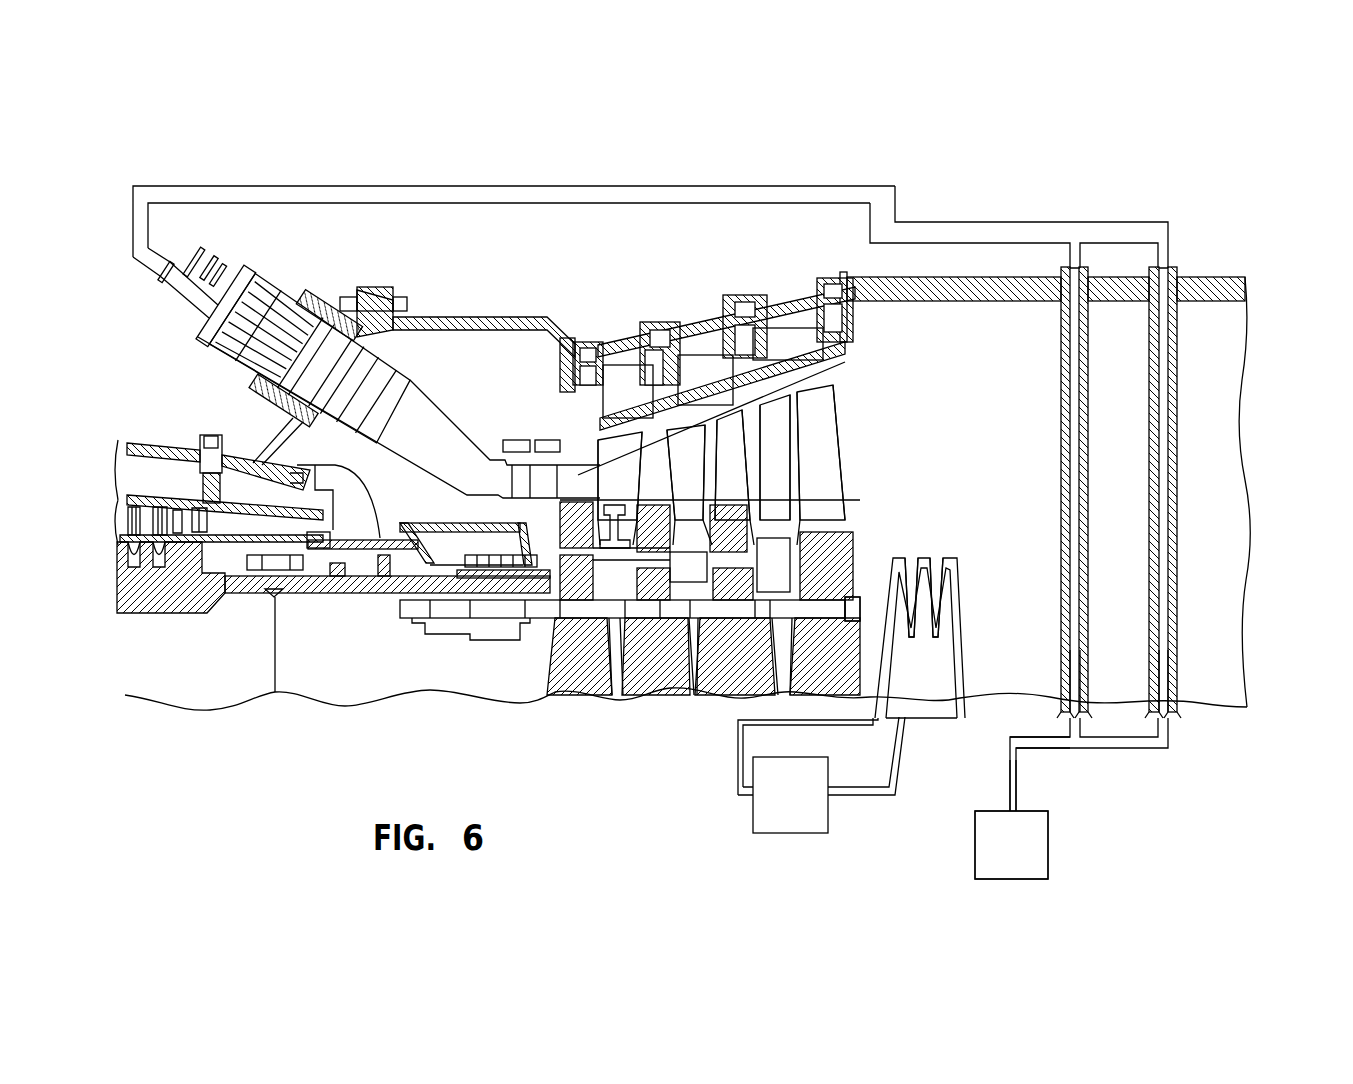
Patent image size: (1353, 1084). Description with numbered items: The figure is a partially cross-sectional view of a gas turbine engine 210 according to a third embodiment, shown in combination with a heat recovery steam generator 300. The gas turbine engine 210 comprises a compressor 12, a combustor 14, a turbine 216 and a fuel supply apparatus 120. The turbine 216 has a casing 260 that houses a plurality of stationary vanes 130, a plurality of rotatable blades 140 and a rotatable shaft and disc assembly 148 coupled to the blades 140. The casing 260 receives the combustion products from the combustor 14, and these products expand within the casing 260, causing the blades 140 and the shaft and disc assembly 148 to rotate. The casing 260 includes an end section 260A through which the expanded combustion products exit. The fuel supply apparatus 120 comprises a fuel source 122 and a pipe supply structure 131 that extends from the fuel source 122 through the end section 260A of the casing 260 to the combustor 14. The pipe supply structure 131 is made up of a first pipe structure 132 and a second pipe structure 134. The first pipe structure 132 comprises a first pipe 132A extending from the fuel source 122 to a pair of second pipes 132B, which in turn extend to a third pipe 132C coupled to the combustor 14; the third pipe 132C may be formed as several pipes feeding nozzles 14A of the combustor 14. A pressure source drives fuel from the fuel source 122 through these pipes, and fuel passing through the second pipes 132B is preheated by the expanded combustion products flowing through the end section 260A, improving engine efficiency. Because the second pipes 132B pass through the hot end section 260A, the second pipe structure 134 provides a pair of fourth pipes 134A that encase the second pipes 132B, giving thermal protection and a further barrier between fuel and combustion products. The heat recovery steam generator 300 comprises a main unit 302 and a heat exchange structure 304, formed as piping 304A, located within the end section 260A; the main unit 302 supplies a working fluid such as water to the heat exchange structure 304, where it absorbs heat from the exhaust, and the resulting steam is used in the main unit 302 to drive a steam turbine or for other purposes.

The gas turbine engine 210 is at (203, 163).
The compressor 12 is at (149, 440).
The combustor 14 is at (312, 293).
The nozzles 14A is at (200, 291).
The third pipe 132C is at (668, 188).
The first pipe structure 132 is at (953, 226).
The first pipe 132A is at (1042, 752).
The second pipes 132B is at (1165, 612).
The casing 260 is at (900, 300).
The end section 260A is at (1220, 277).
The turbine 216 is at (771, 290).
The rotatable blades 140 is at (813, 425).
The stationary vanes 130 is at (770, 492).
The shaft and disc assembly 148 is at (862, 545).
The second pipe structure 134 is at (1172, 522).
The fourth pipes 134A is at (1172, 422).
The heat exchange structure 304 is at (964, 559).
The piping 304A is at (922, 556).
The heat recovery steam generator 300 is at (730, 814).
The main unit 302 is at (775, 835).
The pipe supply structure 131 is at (1036, 716).
The fuel source 122 is at (975, 843).
The fuel supply apparatus 120 is at (954, 881).